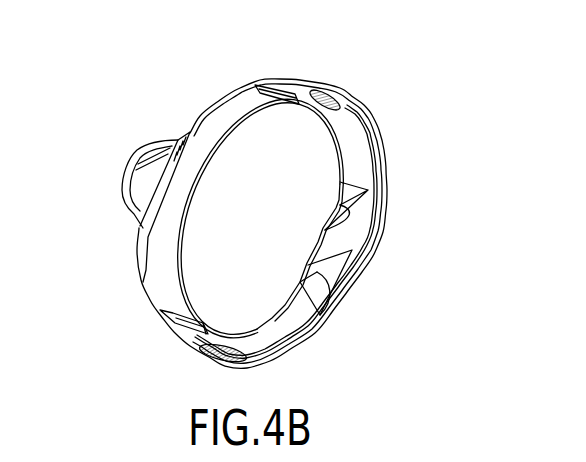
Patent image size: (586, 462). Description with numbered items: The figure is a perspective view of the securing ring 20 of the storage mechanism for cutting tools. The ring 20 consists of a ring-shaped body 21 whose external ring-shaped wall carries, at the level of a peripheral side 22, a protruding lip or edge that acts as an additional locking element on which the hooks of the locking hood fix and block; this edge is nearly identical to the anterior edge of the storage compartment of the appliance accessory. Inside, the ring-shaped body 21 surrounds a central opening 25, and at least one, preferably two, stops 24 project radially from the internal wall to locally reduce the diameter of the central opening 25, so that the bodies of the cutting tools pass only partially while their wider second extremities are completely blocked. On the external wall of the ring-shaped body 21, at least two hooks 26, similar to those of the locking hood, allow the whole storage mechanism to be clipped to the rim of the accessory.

The securing ring 20 is at (419, 180).
The ring-shaped body 21 is at (343, 125).
The peripheral side 22 is at (320, 338).
The stops 24 is at (262, 86).
The central opening 25 is at (282, 228).
The hooks 26 is at (133, 170).